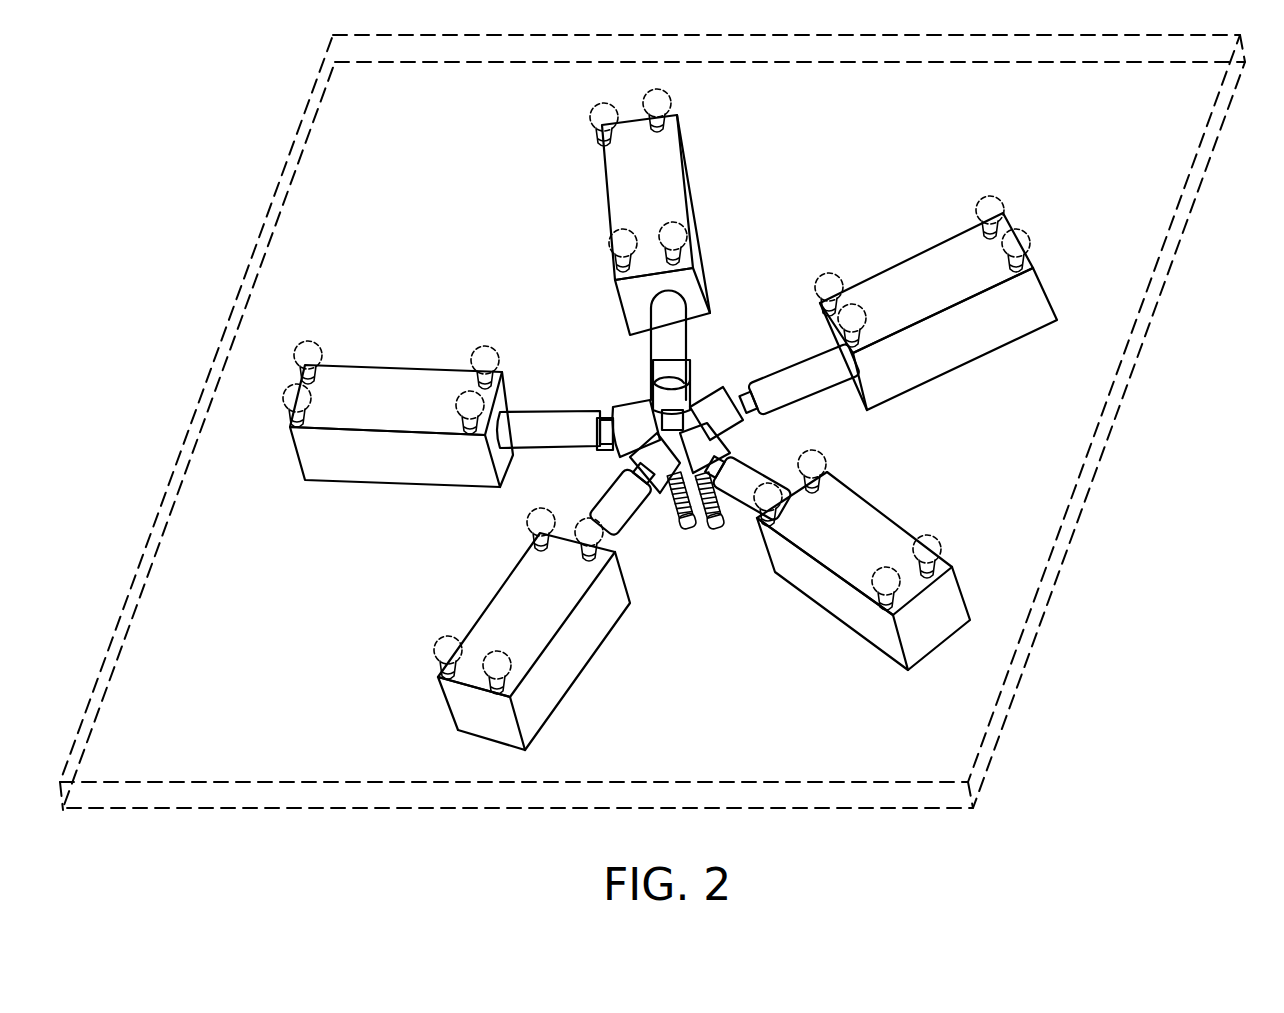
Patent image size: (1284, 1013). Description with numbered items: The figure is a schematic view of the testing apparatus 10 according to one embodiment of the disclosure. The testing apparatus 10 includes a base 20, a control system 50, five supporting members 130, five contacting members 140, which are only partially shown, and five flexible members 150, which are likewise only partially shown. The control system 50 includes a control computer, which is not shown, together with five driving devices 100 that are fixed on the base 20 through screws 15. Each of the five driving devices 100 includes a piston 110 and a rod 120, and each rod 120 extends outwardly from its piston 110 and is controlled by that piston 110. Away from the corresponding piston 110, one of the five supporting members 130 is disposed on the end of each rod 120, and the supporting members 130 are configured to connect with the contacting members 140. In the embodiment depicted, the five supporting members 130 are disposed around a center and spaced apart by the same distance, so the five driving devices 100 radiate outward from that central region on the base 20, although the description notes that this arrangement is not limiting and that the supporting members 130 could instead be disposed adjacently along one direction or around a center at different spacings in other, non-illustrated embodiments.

The testing apparatus 10 is at (193, 140).
The base 20 is at (1160, 172).
The control system 50 is at (930, 142).
The driving device 100 is at (600, 180).
The piston 110 is at (845, 607).
The rod 120 is at (745, 492).
The screw 15 is at (470, 405).
The supporting member 130 is at (630, 412).
The contacting member 140 is at (717, 520).
The flexible member 150 is at (678, 512).